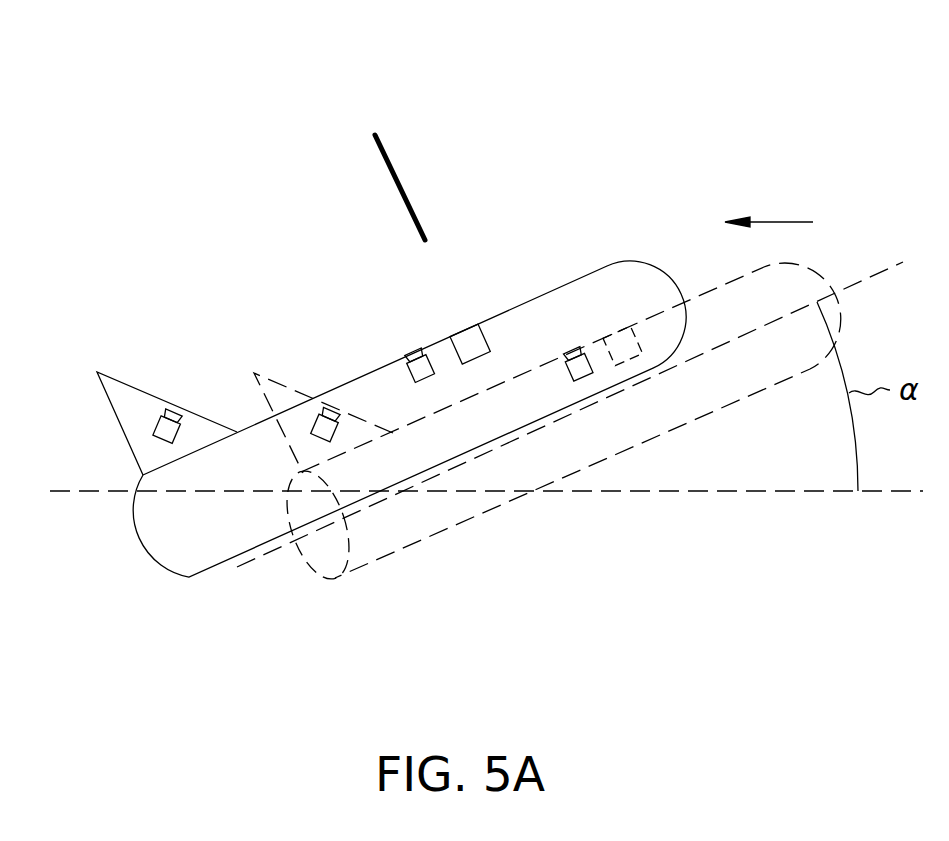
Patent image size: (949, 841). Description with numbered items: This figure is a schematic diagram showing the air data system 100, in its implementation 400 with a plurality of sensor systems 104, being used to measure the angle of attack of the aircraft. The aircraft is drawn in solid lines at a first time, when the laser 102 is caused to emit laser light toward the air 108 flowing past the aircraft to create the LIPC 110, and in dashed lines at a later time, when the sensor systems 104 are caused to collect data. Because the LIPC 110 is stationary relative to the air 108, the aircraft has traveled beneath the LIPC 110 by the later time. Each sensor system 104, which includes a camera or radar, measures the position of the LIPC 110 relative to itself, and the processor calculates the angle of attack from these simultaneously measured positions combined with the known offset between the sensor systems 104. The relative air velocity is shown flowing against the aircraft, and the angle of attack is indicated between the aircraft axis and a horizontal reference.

The air data system 100 is at (236, 71).
The implementation 400 is at (395, 438).
The laser 102 is at (460, 337).
The sensor system 104 is at (159, 416).
The air 108 is at (676, 96).
The LIPC 110 is at (380, 158).